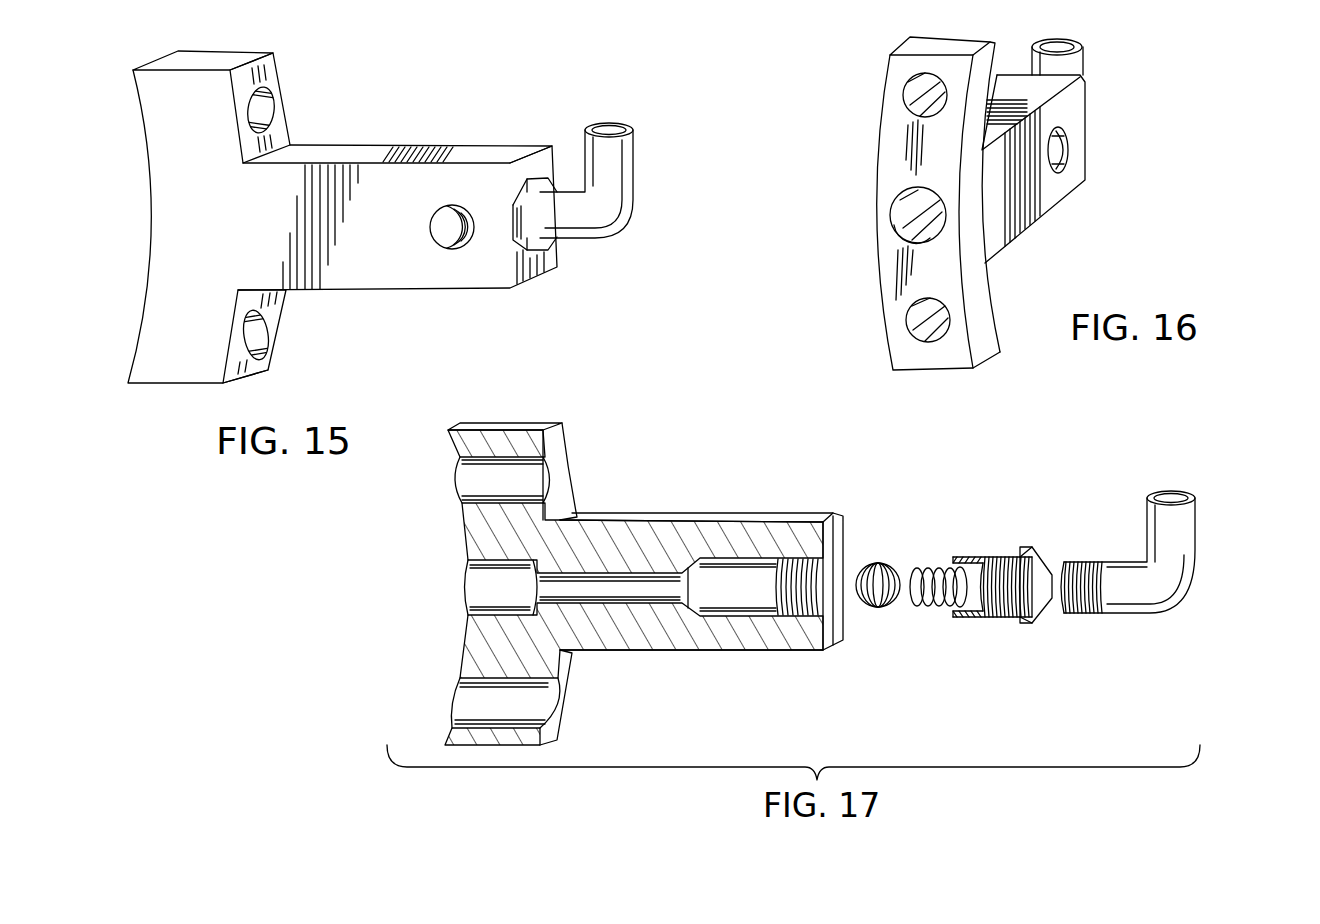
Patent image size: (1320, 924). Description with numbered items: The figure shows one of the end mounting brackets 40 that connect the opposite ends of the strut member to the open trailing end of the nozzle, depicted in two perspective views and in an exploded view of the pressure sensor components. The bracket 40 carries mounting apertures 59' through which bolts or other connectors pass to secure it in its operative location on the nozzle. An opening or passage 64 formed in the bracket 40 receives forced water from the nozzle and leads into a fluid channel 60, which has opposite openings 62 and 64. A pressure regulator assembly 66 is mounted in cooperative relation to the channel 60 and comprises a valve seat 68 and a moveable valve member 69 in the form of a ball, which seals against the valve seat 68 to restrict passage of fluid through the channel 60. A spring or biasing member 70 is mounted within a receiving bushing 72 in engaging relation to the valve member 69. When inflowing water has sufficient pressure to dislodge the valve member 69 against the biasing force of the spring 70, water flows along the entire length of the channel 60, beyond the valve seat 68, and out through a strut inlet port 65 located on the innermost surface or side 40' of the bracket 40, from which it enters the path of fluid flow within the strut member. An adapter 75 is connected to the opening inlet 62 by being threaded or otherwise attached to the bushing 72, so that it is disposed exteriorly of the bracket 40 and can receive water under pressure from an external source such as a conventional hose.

In FIG. 15, the end mounting bracket 40 is at (342, 217).
In FIG. 16, the end mounting bracket 40 is at (1026, 198).
In FIG. 17, the end mounting bracket 40 is at (645, 584).
In FIG. 15, the innermost surface or side 40' is at (413, 252).
In FIG. 16, the innermost surface or side 40' is at (1051, 177).
In FIG. 17, the innermost surface or side 40' is at (634, 587).
In FIG. 15, the mounting apertures 59' is at (299, 221).
In FIG. 16, the mounting apertures 59' is at (888, 221).
In FIG. 17, the mounting apertures 59' is at (551, 591).
In FIG. 17, the fluid channel 60 is at (601, 608).
In FIG. 17, the opening or passage 62 is at (827, 563).
In FIG. 16, the opening or passage 64 is at (920, 236).
In FIG. 17, the opening or passage 64 is at (483, 588).
In FIG. 15, the strut inlet port 65 is at (435, 243).
In FIG. 16, the strut inlet port 65 is at (1067, 148).
In FIG. 15, the pressure regulator assembly 66 is at (535, 214).
In FIG. 17, the pressure regulator assembly 66 is at (1003, 545).
In FIG. 17, the valve seat 68 is at (717, 612).
In FIG. 17, the valve member 69 is at (882, 607).
In FIG. 15, the spring or biasing member 70 is at (452, 205).
In FIG. 17, the spring or biasing member 70 is at (932, 568).
In FIG. 17, the receiving bushing 72 is at (988, 622).
In FIG. 15, the adapter 75 is at (618, 168).
In FIG. 16, the adapter 75 is at (1057, 57).
In FIG. 17, the adapter 75 is at (1180, 538).